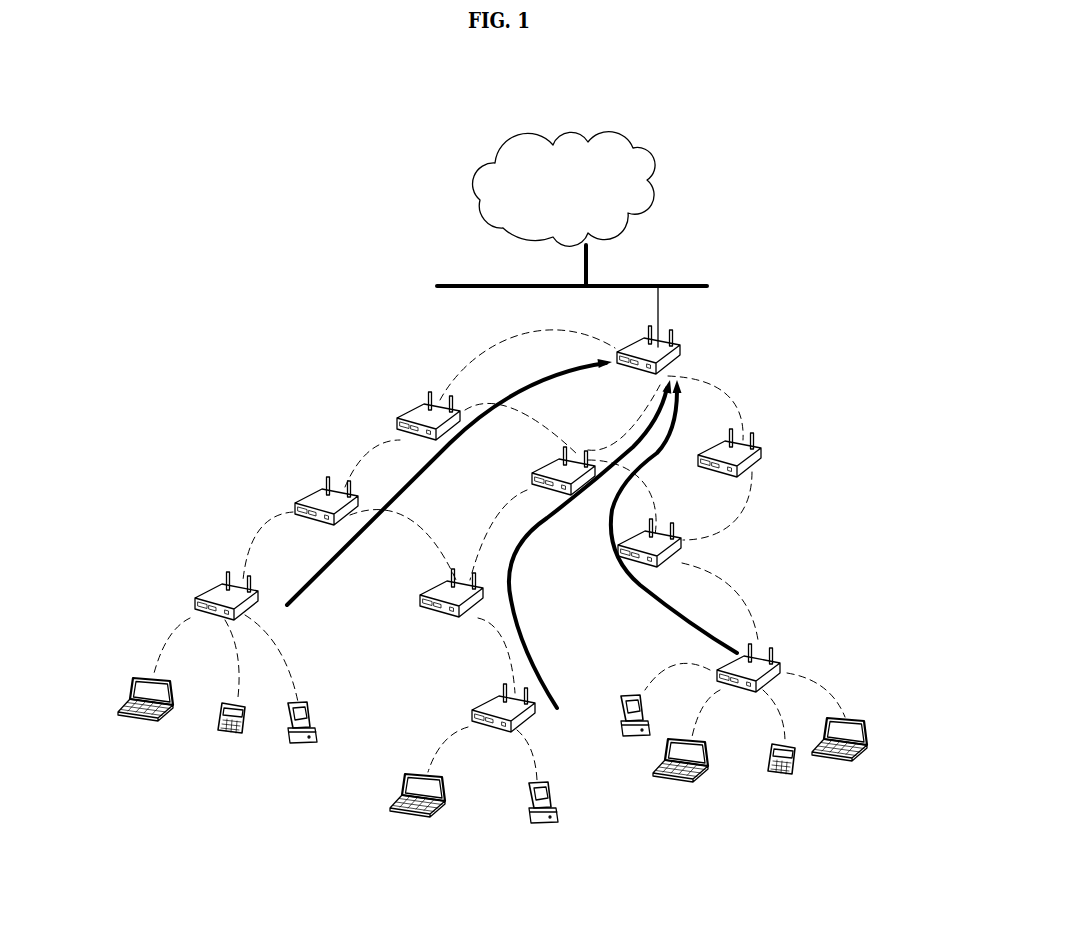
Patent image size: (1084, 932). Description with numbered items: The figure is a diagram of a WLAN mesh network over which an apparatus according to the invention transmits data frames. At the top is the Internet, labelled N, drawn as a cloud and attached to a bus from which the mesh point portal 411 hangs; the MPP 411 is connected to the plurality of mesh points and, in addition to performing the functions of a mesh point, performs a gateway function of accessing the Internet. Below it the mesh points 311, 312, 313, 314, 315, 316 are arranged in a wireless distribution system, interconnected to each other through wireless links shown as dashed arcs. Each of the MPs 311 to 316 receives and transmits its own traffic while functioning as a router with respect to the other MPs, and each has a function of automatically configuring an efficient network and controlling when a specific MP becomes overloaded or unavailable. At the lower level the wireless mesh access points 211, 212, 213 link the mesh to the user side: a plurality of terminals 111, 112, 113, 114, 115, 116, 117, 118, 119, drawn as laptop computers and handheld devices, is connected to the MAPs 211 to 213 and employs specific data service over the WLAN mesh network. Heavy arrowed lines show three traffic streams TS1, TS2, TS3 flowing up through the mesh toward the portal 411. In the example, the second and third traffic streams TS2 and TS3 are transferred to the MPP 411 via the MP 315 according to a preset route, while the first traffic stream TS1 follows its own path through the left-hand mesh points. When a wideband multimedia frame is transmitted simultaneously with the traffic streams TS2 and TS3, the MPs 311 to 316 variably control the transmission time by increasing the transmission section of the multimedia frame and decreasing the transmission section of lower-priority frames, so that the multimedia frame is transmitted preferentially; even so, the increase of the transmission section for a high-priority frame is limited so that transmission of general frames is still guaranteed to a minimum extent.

The Internet network N is at (628, 146).
The mesh point portal 411 is at (667, 345).
The mesh point 311 is at (310, 498).
The mesh point 312 is at (437, 590).
The mesh point 313 is at (683, 548).
The mesh point 314 is at (757, 447).
The mesh point 315 is at (573, 458).
The mesh point 316 is at (413, 415).
The wireless mesh access point 211 is at (212, 593).
The wireless mesh access point 212 is at (473, 712).
The wireless mesh access point 213 is at (773, 660).
The terminal 111 is at (133, 692).
The terminal 112 is at (230, 735).
The terminal 113 is at (310, 703).
The terminal 114 is at (403, 795).
The terminal 115 is at (556, 800).
The terminal 116 is at (683, 777).
The terminal 117 is at (791, 776).
The terminal 118 is at (868, 735).
The terminal 119 is at (620, 705).
The first traffic stream TS1 is at (450, 443).
The second traffic stream TS2 is at (545, 523).
The third traffic stream TS3 is at (660, 453).